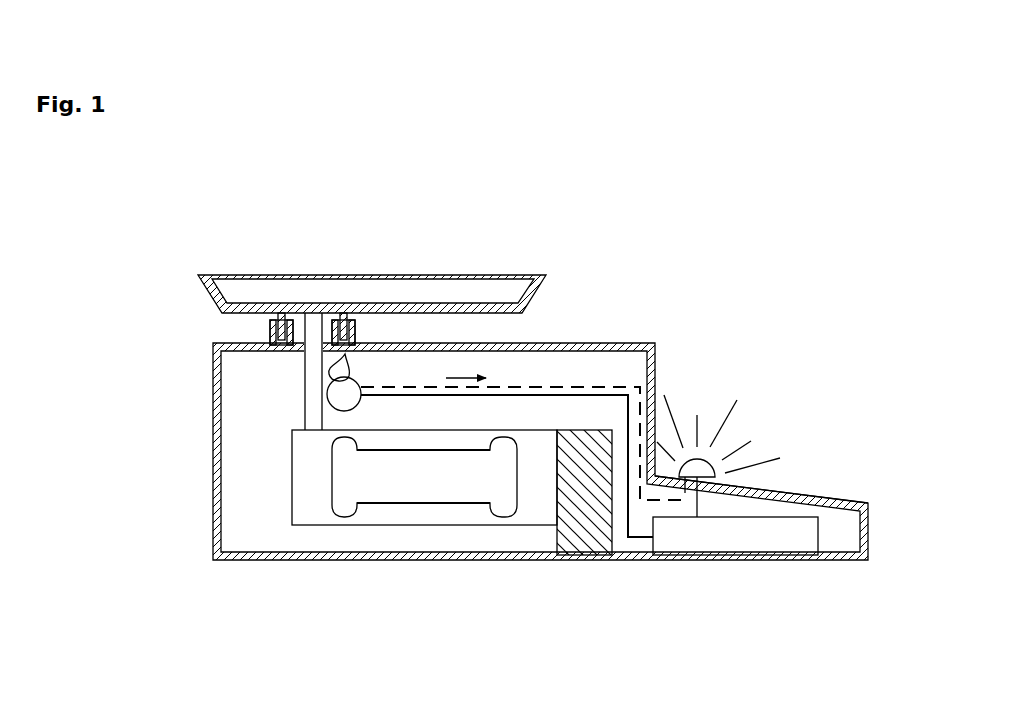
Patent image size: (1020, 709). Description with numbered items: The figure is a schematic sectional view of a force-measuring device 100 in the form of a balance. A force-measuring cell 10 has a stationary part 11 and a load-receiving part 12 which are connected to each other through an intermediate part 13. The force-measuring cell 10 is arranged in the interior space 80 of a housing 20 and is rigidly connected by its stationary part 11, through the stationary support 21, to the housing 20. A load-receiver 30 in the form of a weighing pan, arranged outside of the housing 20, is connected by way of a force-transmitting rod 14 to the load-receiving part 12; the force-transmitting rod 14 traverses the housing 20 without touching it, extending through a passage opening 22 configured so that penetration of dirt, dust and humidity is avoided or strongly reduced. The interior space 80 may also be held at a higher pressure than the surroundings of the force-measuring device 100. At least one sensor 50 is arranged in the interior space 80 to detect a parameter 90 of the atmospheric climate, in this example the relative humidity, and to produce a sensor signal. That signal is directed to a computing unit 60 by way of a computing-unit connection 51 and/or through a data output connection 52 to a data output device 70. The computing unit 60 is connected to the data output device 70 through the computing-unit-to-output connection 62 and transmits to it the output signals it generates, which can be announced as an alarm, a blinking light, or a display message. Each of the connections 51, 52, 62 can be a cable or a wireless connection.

The force-measuring device 100 is at (160, 270).
The load-receiver 30 is at (268, 287).
The passage opening 22 is at (270, 330).
The parameter of the atmospheric climate 90 is at (337, 368).
The force-transmitting rod 14 is at (313, 380).
The sensor 50 is at (327, 396).
The interior space 80 is at (253, 458).
The computing-unit connection 51 is at (578, 393).
The data output connection 52 is at (612, 388).
The data output device 70 is at (694, 472).
The computing-unit-to-output connection 62 is at (740, 478).
The computing unit 60 is at (735, 536).
The housing 20 is at (257, 562).
The load-receiving part 12 is at (313, 487).
The force-measuring cell 10 is at (455, 559).
The intermediate part 13 is at (427, 517).
The stationary part 11 is at (532, 503).
The stationary support 21 is at (580, 513).